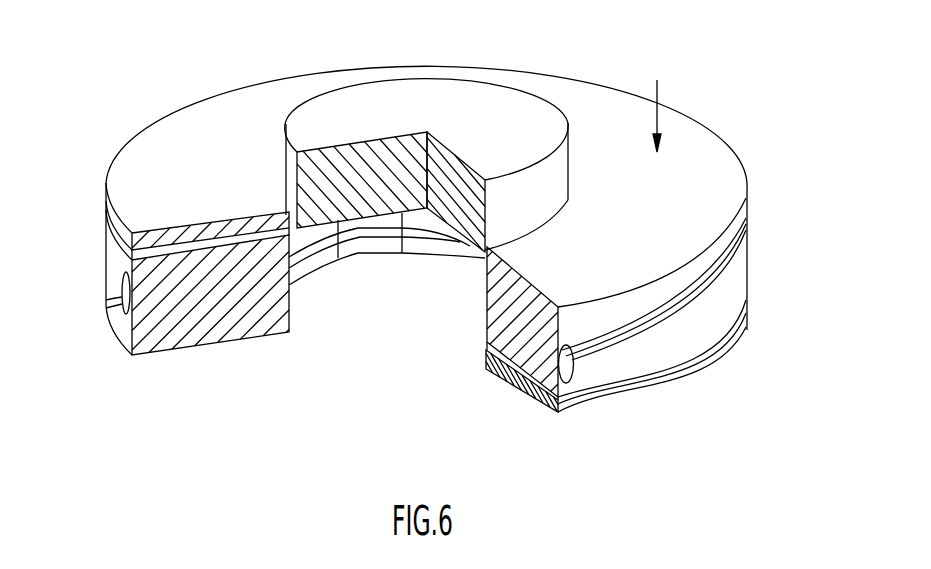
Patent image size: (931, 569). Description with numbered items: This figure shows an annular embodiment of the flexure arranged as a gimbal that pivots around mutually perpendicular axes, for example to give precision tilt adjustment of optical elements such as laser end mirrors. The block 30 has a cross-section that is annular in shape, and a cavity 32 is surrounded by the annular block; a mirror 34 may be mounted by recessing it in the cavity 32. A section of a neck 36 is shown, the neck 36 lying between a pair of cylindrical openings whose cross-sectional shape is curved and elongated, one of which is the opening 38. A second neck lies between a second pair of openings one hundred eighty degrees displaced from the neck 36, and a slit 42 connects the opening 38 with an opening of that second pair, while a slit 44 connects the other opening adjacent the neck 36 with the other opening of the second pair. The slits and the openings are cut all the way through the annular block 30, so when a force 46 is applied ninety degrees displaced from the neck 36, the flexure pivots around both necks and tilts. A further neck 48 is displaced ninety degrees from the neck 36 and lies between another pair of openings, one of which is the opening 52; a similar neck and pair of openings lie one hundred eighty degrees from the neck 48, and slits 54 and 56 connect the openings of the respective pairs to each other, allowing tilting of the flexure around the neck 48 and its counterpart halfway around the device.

The block 30 is at (738, 278).
The cavity 32 is at (380, 287).
The mirror 34 is at (483, 93).
The neck 36 is at (531, 362).
The cylindrical opening 38 is at (570, 377).
The slit 42 is at (664, 297).
The slit 44 is at (208, 248).
The force 46 is at (658, 92).
The neck 48 is at (182, 338).
The opening 52 is at (127, 307).
The slit 54 is at (670, 371).
The slit 56 is at (110, 327).